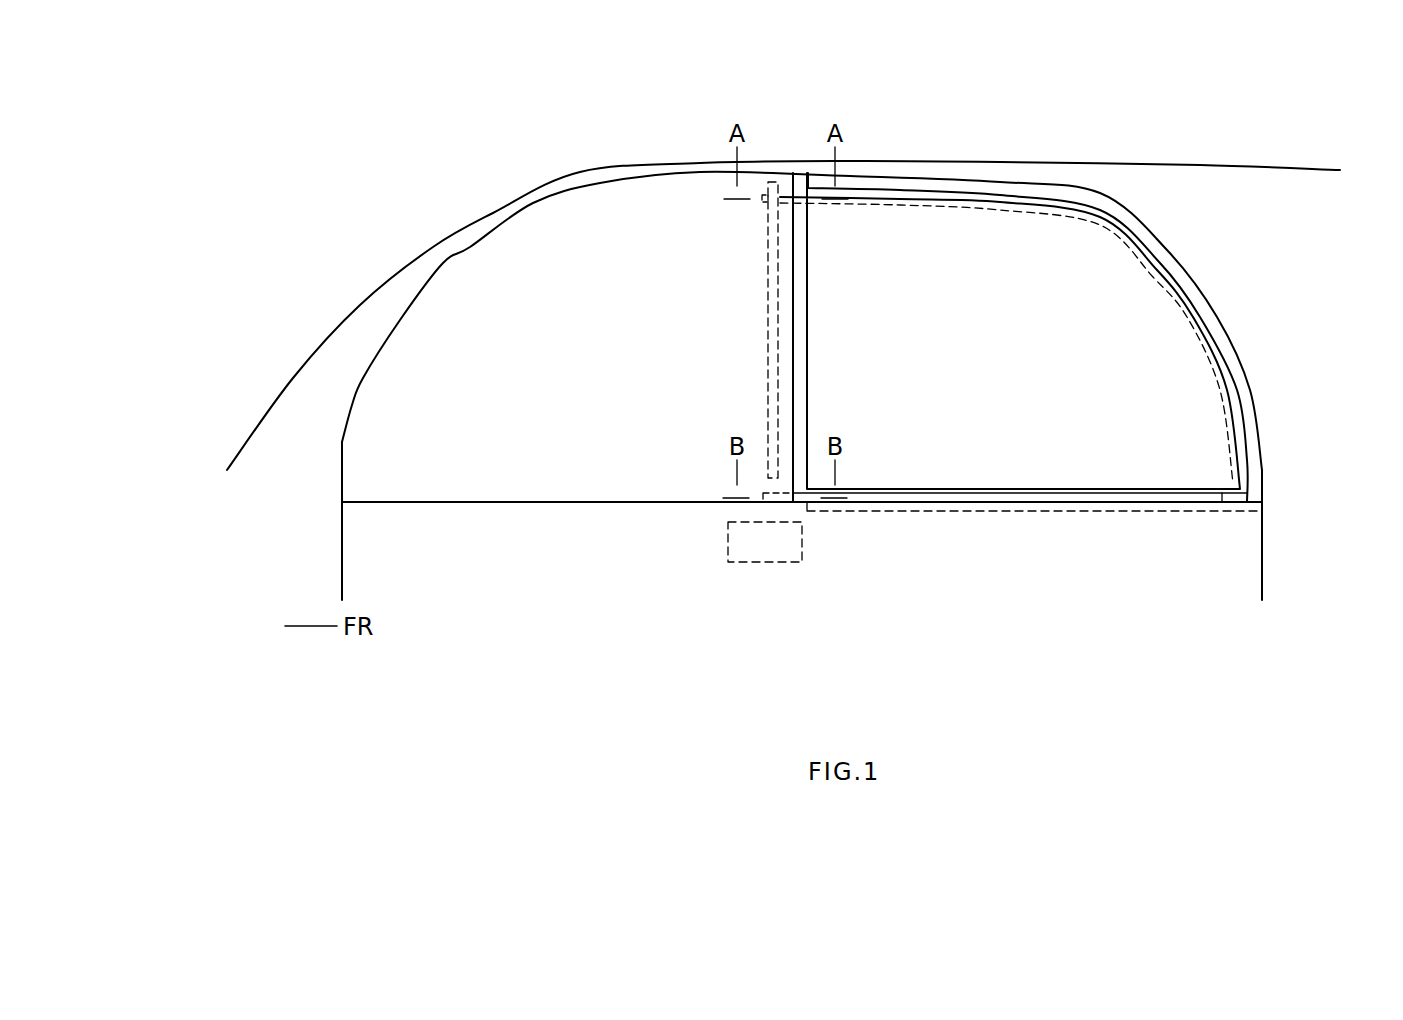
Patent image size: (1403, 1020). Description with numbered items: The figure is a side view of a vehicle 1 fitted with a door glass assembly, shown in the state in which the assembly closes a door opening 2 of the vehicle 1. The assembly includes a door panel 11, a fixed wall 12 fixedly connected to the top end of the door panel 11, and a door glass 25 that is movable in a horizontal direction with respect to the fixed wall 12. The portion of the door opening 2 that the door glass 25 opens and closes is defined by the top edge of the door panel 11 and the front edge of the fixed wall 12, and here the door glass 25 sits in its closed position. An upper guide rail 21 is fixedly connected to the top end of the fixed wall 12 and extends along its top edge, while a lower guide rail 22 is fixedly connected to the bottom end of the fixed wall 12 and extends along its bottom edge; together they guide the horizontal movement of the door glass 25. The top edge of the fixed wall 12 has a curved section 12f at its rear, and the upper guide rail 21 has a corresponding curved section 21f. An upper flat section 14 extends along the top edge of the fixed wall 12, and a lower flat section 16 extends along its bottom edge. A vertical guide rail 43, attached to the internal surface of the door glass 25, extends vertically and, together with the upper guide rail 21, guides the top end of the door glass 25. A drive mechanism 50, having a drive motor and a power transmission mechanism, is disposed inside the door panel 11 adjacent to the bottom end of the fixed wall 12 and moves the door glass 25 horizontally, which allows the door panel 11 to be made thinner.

The vehicle 1 is at (580, 163).
The door opening 2 is at (468, 250).
The door glass 25 is at (525, 218).
The door panel 11 is at (358, 527).
The upper flat section 14 is at (880, 182).
The upper guide rail 21 is at (968, 197).
The fixed wall 12 is at (1163, 303).
The curved section of upper guide rail 21f is at (1223, 343).
The curved section of fixed wall 12f is at (1237, 403).
The lower guide rail 22 is at (990, 497).
The lower flat section 16 is at (1150, 512).
The vertical guide rail 43 is at (767, 357).
The drive mechanism 50 is at (764, 562).